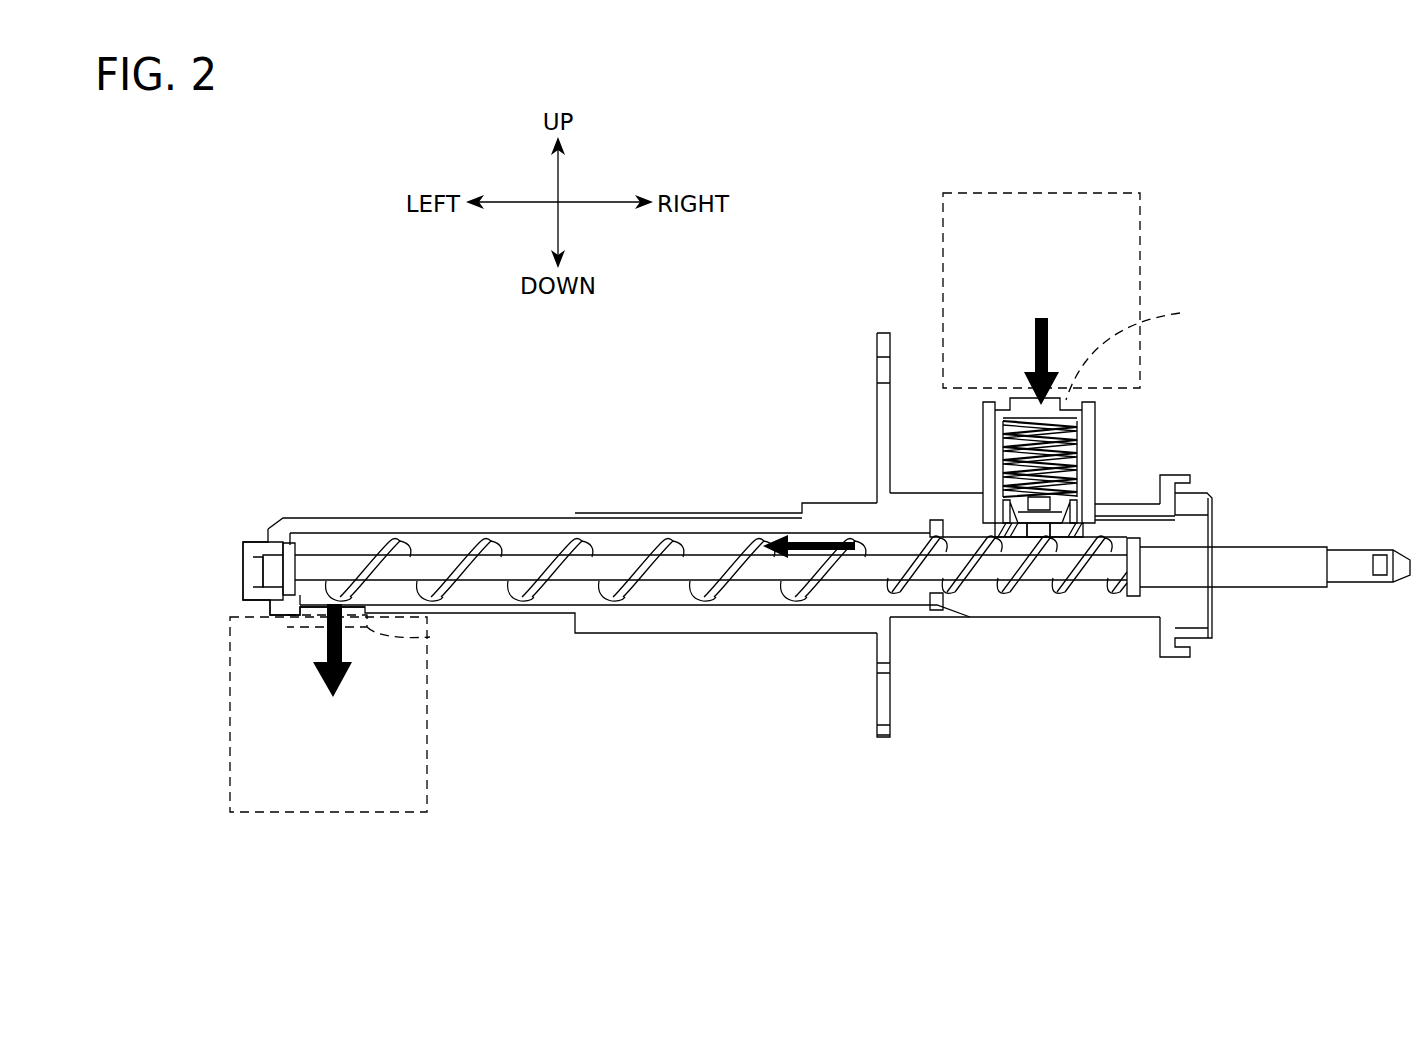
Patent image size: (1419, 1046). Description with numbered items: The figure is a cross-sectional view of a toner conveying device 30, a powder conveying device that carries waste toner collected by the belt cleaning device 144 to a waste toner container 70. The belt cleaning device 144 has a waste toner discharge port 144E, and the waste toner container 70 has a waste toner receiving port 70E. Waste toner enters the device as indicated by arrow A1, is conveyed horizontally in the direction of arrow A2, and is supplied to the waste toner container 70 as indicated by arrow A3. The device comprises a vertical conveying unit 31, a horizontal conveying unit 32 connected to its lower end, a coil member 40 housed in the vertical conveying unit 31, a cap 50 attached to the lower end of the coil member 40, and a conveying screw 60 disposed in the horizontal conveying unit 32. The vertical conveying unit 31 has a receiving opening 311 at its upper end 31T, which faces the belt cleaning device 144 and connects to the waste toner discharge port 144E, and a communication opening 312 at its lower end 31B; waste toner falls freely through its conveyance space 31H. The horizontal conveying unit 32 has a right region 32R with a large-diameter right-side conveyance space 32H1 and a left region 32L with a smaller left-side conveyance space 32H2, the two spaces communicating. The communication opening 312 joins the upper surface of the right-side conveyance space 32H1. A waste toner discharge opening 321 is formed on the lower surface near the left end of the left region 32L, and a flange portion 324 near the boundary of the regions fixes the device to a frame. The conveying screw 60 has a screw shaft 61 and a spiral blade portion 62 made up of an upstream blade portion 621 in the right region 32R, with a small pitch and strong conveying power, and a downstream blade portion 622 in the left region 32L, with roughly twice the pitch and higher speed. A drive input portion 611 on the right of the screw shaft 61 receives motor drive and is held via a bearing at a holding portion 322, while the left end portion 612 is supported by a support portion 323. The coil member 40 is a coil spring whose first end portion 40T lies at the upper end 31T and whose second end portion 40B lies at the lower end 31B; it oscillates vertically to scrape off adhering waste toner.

The toner conveying device 30 is at (534, 404).
The vertical conveying unit 31 is at (985, 422).
The upper end 31T is at (993, 402).
The conveyance space 31H is at (1010, 408).
The lower end 31B is at (980, 503).
The receiving opening 311 is at (1073, 408).
The communication opening 312 is at (1210, 518).
The horizontal conveying unit 32 is at (658, 634).
The left region 32L is at (305, 518).
The right region 32R is at (1135, 628).
The right-side conveyance space 32H1 is at (1090, 607).
The left-side conveyance space 32H2 is at (560, 592).
The waste toner discharge opening 321 is at (310, 607).
The holding portion 322 is at (1200, 643).
The support portion 323 is at (243, 570).
The flange portion 324 is at (883, 400).
The coil member 40 is at (1084, 442).
The first end portion 40T is at (1085, 418).
The second end portion 40B is at (1047, 508).
The cap 50 is at (1086, 506).
The conveying screw 60 is at (813, 579).
The screw shaft 61 is at (690, 565).
The drive input portion 611 is at (1347, 573).
The left end portion 612 is at (272, 565).
The blade portion 62 is at (726, 575).
The upstream blade portion 621 is at (1027, 583).
The downstream blade portion 622 is at (578, 548).
The waste toner container 70 is at (336, 812).
The waste toner receiving port 70E is at (430, 637).
The belt cleaning device 144 is at (1143, 208).
The waste toner discharge port 144E is at (1154, 351).
The arrow A1 is at (1035, 340).
The arrow A2 is at (805, 532).
The arrow A3 is at (345, 648).